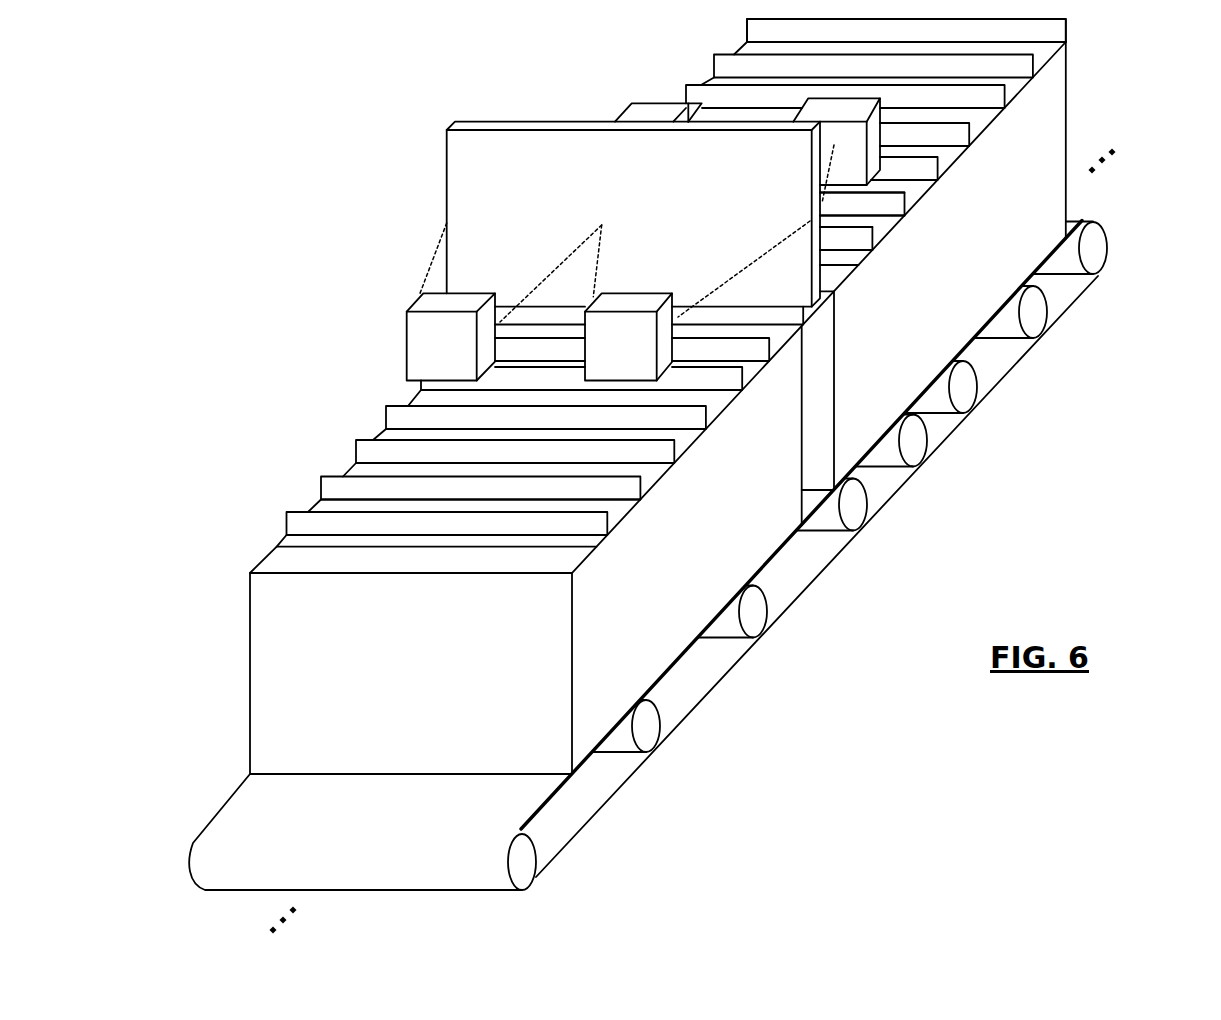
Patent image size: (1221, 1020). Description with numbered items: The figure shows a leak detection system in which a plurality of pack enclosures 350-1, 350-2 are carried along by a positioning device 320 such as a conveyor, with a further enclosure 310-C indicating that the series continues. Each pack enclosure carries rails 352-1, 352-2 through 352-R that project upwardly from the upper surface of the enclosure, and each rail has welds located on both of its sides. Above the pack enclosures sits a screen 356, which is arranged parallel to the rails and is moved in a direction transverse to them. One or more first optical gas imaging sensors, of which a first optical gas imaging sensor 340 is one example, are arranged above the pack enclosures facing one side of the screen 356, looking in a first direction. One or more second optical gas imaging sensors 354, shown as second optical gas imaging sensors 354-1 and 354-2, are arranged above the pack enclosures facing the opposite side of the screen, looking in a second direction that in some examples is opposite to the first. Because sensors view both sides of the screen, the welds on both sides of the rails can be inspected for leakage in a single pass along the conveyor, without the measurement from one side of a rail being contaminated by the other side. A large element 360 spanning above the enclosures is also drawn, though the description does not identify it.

The enclosure 310-C is at (1052, 185).
The positioning device 320 is at (1003, 362).
The first optical gas imaging sensor 340 is at (806, 348).
The pack enclosure 350-1 is at (663, 396).
The pack enclosure 350-2 is at (1028, 235).
The rail 352-1 is at (301, 519).
The rail 352-2 is at (333, 485).
The rail 352-R is at (792, 318).
The second optical gas imaging sensors 354 is at (355, 521).
The screen 356 is at (371, 511).
The second optical gas imaging sensor 354-1 is at (655, 105).
The second optical gas imaging sensor 354-2 is at (820, 103).
The imaging device 360 is at (478, 120).